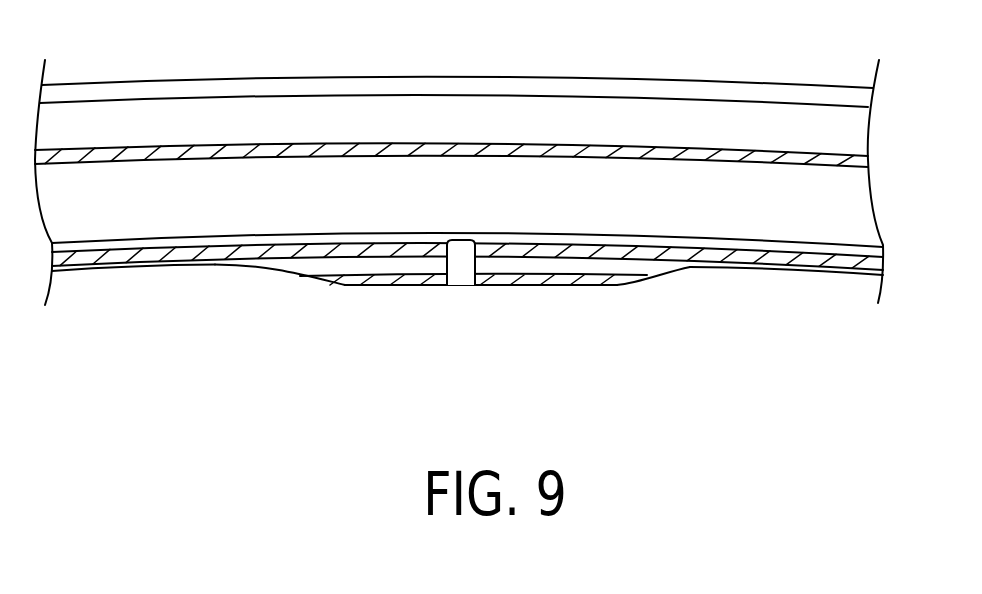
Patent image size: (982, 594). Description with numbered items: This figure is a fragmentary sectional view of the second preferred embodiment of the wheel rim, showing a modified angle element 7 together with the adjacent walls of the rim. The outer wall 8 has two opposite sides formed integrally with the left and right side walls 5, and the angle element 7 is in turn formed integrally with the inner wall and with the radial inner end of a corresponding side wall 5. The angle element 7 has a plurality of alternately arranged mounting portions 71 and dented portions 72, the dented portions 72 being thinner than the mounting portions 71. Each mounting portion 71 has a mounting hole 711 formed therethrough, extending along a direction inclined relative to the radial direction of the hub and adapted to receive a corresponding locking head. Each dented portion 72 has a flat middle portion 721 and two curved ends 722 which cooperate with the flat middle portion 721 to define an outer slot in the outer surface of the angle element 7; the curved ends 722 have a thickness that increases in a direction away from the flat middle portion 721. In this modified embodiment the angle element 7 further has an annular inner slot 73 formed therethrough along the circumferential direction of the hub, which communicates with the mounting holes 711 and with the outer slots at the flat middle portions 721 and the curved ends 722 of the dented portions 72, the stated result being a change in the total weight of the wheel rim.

The side wall 5 is at (672, 113).
The outer wall 8 is at (572, 148).
The angle element 7 is at (582, 330).
The mounting portion 71 is at (532, 286).
The mounting hole 711 is at (457, 273).
The dented portion 72 is at (140, 268).
The flat middle portion 721 is at (857, 273).
The curved end 722 is at (643, 275).
The inner slot 73 is at (348, 265).